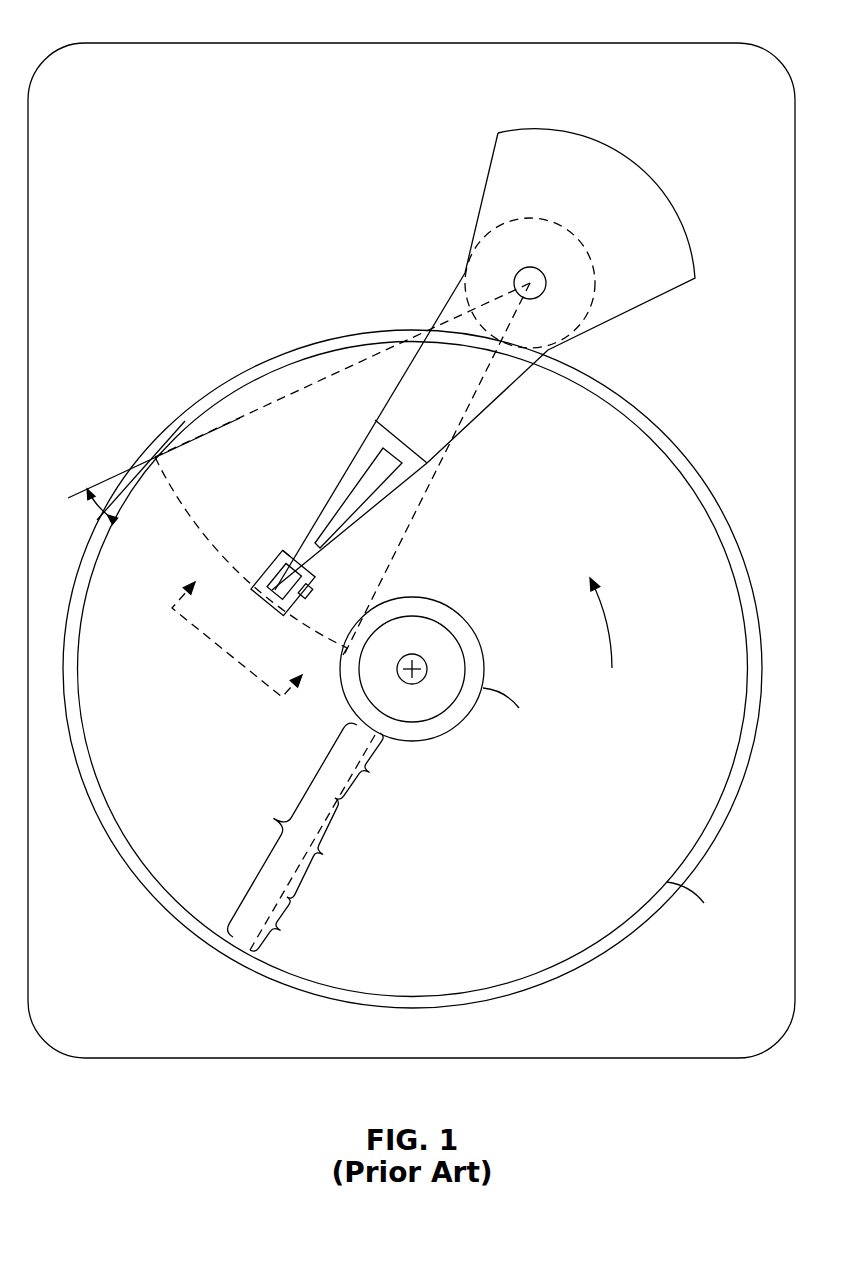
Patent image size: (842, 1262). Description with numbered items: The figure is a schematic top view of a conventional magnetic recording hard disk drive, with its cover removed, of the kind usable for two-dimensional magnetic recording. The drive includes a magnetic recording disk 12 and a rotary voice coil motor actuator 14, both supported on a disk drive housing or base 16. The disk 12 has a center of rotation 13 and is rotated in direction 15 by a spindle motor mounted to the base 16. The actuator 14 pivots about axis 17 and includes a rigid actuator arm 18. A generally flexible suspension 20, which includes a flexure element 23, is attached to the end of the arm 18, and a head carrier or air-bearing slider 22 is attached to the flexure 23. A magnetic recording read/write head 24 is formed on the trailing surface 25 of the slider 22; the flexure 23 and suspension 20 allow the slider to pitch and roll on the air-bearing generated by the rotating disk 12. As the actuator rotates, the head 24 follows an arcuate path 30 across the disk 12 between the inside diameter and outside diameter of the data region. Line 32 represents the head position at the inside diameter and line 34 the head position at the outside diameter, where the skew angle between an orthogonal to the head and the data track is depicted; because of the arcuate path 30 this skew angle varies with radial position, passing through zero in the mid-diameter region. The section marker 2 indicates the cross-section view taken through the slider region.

The magnetic disk 12 is at (518, 900).
The spindle hub 13 is at (427, 664).
The actuator body 14 is at (633, 158).
The disk rotation direction arrow 15 is at (620, 636).
The disk drive housing 16 is at (680, 43).
The actuator pivot 17 is at (515, 283).
The actuator arm 18 is at (397, 403).
The arm slot 20 is at (365, 458).
The head gimbal assembly 22 is at (277, 558).
The slider tab 23 is at (302, 589).
The slider 24 is at (292, 622).
The flexure 25 is at (258, 599).
The head sweep arc 30 is at (197, 524).
The inner diameter head position 32 is at (345, 650).
The outer diameter head position 34 is at (165, 462).
The section line 2- 2 is at (246, 629).